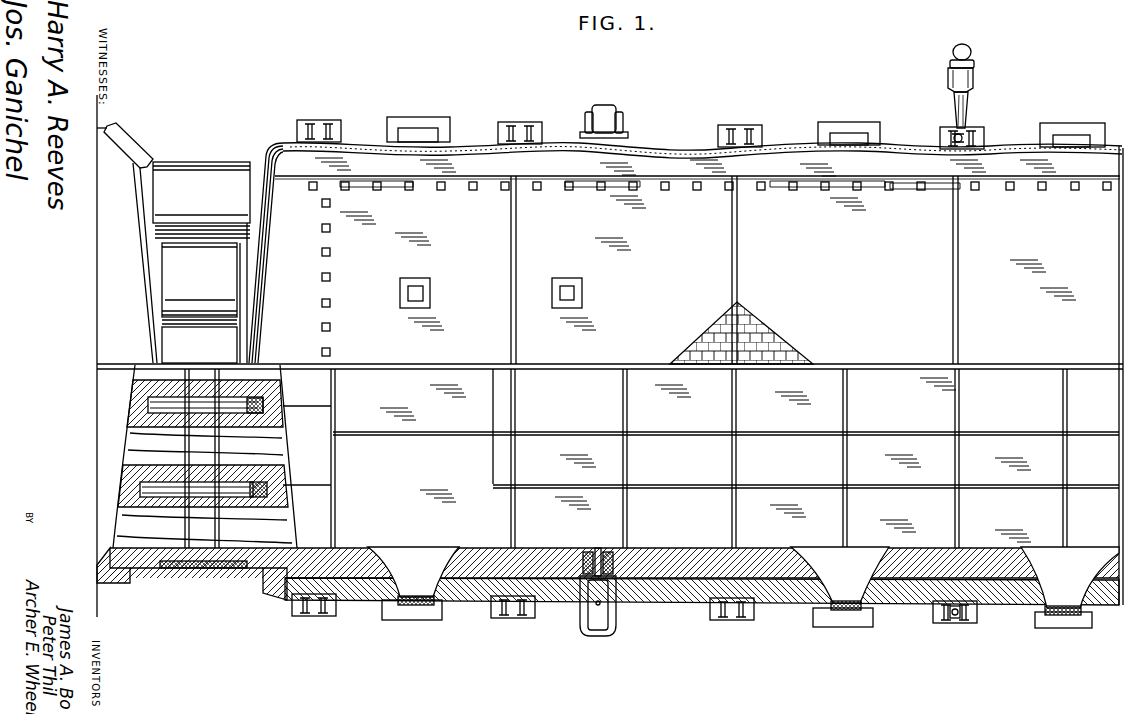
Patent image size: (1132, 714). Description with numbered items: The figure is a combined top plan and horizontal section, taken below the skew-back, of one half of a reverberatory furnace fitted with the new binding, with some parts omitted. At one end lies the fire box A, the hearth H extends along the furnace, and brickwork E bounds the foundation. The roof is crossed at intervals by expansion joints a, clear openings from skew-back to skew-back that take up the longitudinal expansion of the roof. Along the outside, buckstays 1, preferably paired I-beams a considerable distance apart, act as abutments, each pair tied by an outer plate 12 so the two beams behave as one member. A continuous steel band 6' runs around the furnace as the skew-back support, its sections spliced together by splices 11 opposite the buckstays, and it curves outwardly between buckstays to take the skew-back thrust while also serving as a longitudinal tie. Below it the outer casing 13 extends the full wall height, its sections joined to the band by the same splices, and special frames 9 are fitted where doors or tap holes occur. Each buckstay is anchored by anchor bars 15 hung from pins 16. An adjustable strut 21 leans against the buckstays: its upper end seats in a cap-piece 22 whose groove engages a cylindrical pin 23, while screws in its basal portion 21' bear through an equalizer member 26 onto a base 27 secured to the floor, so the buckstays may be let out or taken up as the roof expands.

The buckstays 1 is at (300, 125).
The skew-back support band 6' is at (641, 119).
The special frames 9 is at (625, 131).
The splices 11 is at (479, 143).
The outer plate 12 is at (321, 126).
The outer casing 13 is at (457, 118).
The anchor bars 15 is at (952, 623).
The pins 16 is at (962, 612).
The adjustable strut 21 is at (981, 107).
The basal portion of the strut 21' is at (982, 77).
The cap-piece 22 is at (985, 132).
The cylindrical pin 23 is at (952, 140).
The equalizer member 26 is at (975, 64).
The base 27 is at (968, 47).
The expansion joints a is at (517, 248).
The fire box A is at (100, 395).
The brickwork E is at (672, 210).
The hearth H is at (873, 388).